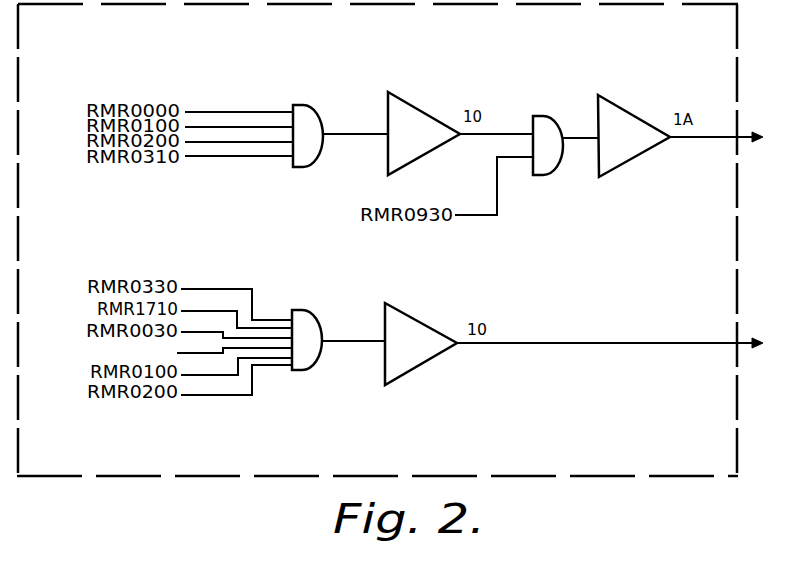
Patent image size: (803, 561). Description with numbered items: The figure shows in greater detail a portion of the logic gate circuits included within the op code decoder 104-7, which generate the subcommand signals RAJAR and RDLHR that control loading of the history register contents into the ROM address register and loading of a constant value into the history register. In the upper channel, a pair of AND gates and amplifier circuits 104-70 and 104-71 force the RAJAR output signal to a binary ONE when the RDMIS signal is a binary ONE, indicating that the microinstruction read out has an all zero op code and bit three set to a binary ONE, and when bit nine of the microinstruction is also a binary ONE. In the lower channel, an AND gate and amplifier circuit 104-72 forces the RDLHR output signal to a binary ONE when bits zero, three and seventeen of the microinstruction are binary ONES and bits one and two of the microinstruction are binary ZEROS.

The op code decoder 104-7 is at (236, 41).
The AND gate and amplifier circuit 104-71 is at (417, 104).
The AND gate and amplifier circuit 104-70 is at (627, 108).
The AND gate and amplifier circuit 104-72 is at (412, 315).